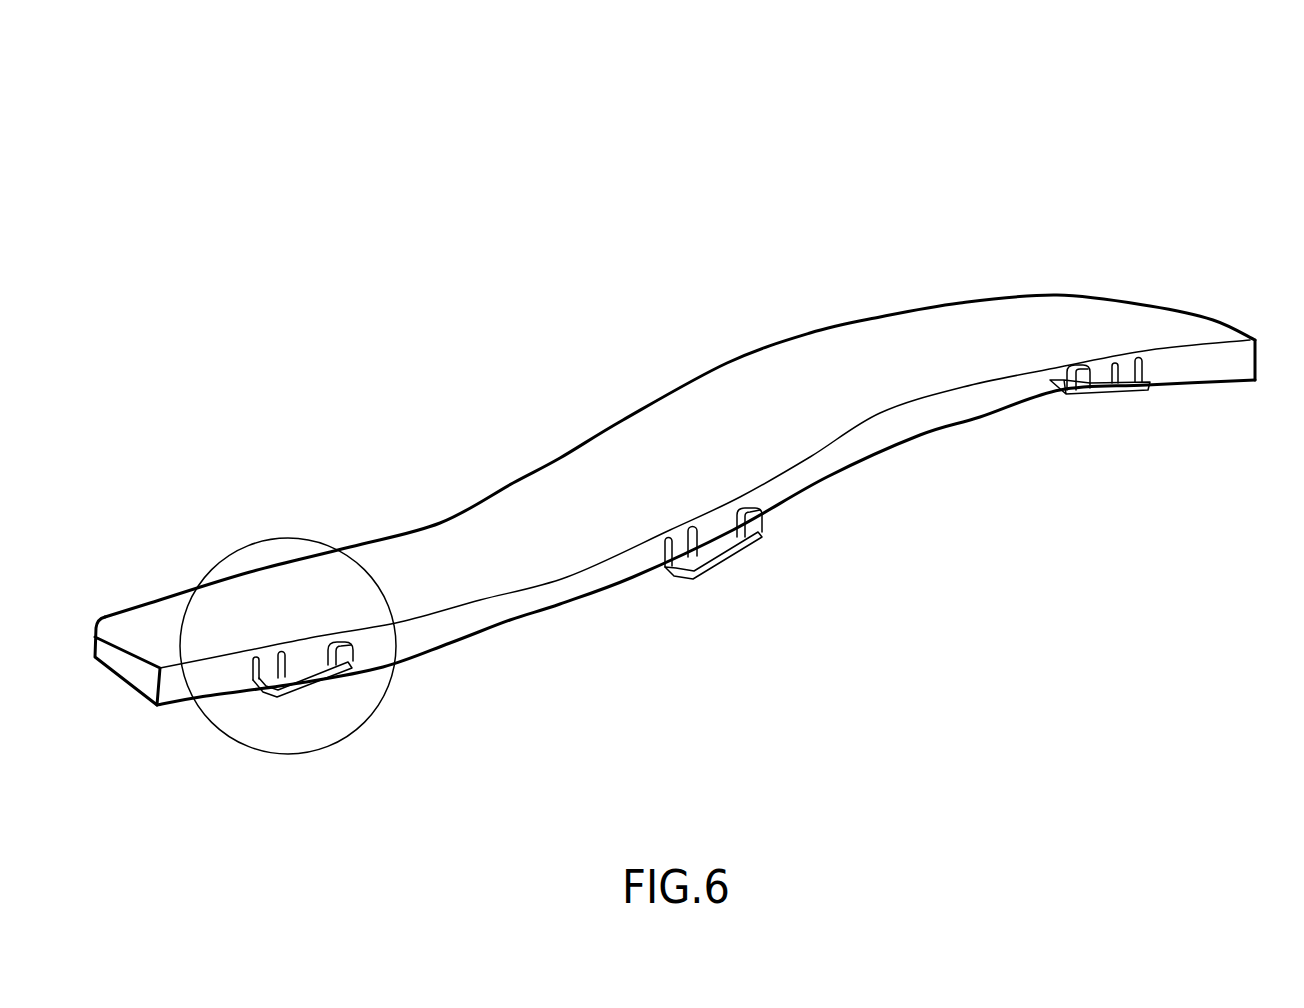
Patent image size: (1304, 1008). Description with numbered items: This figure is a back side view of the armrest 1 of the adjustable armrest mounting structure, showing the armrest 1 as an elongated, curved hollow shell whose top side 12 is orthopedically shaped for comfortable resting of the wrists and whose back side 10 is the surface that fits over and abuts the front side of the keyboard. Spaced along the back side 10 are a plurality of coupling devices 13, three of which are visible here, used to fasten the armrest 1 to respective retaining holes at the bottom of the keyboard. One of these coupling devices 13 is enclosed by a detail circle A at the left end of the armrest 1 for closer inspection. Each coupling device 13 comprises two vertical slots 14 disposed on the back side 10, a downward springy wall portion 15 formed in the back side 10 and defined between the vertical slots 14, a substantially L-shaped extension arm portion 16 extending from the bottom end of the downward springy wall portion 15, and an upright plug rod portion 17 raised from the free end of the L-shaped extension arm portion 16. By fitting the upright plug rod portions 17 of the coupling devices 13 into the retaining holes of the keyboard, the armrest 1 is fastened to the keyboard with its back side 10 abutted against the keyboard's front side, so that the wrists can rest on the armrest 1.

The armrest 1 is at (675, 378).
The back side 10 is at (961, 400).
The top side 12 is at (883, 355).
The coupling device 13 is at (305, 645).
The vertical slots 14 is at (1143, 363).
The downward springy wall portion 15 is at (1127, 370).
The L-shaped extension arm portion 16 is at (1103, 387).
The upright plug rod portion 17 is at (1078, 365).
The detail circle A is at (313, 540).